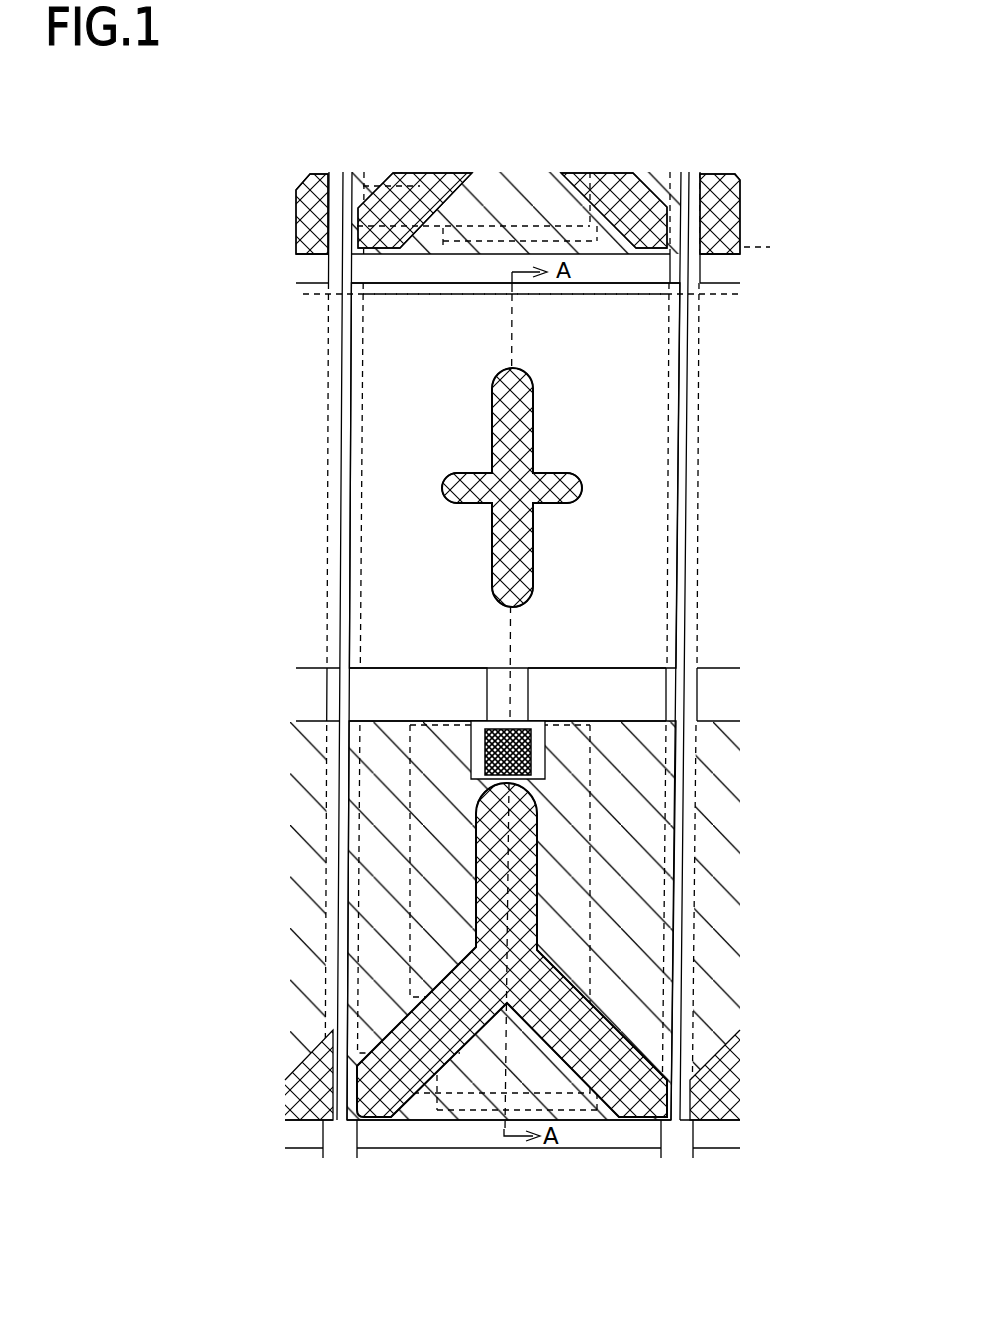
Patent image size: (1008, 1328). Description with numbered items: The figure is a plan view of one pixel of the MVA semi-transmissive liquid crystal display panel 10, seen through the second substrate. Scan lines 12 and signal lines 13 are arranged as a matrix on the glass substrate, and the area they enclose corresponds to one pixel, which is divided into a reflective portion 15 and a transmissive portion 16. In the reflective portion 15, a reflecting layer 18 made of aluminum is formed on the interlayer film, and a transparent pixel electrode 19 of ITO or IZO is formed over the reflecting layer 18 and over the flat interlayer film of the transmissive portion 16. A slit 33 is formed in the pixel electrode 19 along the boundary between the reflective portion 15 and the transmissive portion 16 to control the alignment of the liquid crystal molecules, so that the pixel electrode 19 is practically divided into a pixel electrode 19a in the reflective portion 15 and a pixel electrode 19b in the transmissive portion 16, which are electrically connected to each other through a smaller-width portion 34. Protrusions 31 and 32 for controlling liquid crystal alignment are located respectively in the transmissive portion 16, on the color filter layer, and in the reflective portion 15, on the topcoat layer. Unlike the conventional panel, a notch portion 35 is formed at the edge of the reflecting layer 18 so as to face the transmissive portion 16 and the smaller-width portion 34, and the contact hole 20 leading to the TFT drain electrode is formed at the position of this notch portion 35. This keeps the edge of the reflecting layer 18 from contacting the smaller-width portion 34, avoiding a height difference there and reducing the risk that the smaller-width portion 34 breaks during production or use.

The MVA semi-transmissive liquid crystal display panel 10 is at (251, 137).
The scan lines 12 is at (423, 268).
The signal lines 13 is at (684, 343).
The reflective portion 15 is at (632, 805).
The transmissive portion 16 is at (485, 318).
The reflecting layer 18 is at (387, 853).
The pixel electrode 19 is at (431, 351).
The pixel electrode formed in the reflective portion 19a is at (692, 906).
The pixel electrode formed in the transmissive portion 19b is at (640, 443).
The contact hole 20 is at (487, 760).
The protrusion 31 is at (487, 488).
The protrusion 32 is at (552, 1007).
The slit 33 is at (610, 685).
The smaller-width portion 34 is at (520, 667).
The notch portion 35 is at (533, 750).